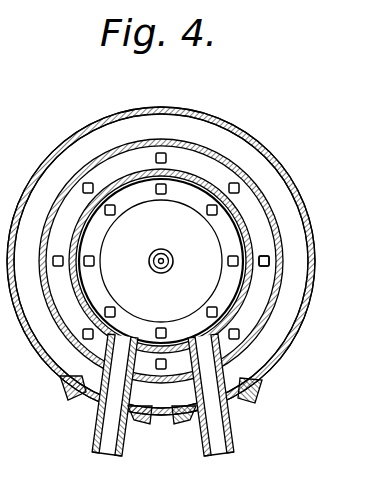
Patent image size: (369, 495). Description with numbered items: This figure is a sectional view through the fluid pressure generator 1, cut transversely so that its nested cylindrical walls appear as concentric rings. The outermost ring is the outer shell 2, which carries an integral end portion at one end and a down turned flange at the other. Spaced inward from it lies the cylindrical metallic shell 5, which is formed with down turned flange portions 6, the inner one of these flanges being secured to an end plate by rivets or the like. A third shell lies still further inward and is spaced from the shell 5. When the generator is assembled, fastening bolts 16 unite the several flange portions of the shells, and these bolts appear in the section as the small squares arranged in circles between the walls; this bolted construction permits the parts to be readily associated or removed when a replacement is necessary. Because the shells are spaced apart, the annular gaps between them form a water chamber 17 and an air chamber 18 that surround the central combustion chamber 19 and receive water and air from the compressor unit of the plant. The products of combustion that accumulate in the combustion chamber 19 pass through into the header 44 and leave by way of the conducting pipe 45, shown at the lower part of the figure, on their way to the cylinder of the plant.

The fluid pressure generator 1 is at (181, 96).
The outer shell 2 is at (214, 119).
The cylindrical metallic shell 5 is at (226, 154).
The down turned flange portions 6 is at (241, 182).
The fastening bolts 16 is at (235, 256).
The water chamber 17 is at (82, 151).
The air chamber 18 is at (84, 186).
The combustion chamber 19 is at (104, 212).
The header 44 is at (208, 273).
The conducting pipe 45 is at (165, 413).